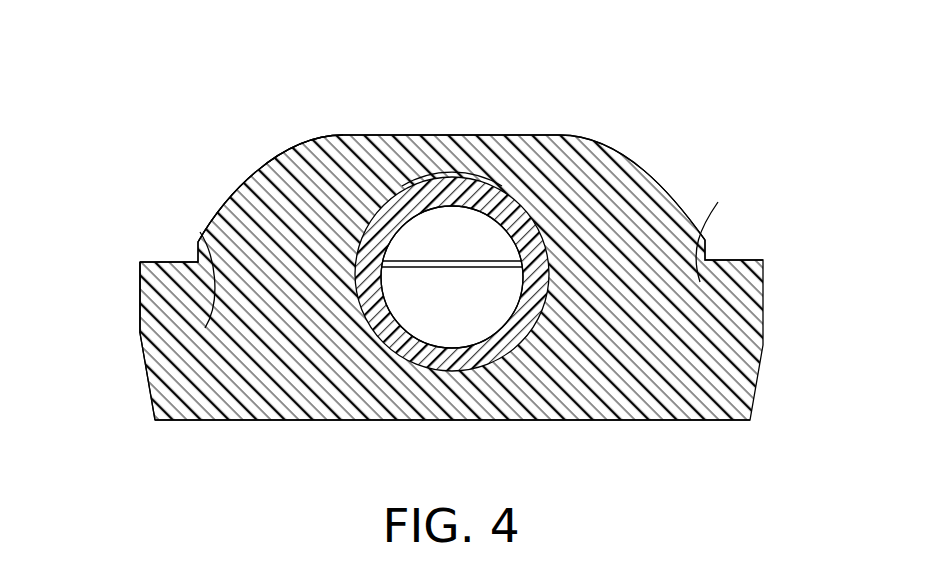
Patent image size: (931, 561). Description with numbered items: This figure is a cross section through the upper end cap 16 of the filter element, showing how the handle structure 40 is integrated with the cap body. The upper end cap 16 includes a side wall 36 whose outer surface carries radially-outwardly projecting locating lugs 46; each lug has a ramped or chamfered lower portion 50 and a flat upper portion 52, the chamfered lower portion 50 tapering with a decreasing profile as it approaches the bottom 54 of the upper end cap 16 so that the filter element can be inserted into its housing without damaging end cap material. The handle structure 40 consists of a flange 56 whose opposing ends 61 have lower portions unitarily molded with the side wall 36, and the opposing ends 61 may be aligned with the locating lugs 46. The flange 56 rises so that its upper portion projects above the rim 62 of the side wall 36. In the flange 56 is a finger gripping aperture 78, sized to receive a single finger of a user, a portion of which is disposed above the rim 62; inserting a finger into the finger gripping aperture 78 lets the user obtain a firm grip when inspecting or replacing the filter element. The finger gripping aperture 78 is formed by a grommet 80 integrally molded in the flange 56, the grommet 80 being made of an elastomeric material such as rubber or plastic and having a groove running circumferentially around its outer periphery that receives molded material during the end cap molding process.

The upper end cap 16 is at (355, 112).
The side wall 36 is at (177, 270).
The handle structure 40 is at (637, 143).
The locating lugs 46 is at (148, 332).
The chamfered lower portion 50 is at (150, 400).
The flat upper portion 52 is at (140, 298).
The bottom 54 is at (290, 421).
The flange 56 is at (260, 180).
The opposing ends 61 is at (175, 263).
The rim 62 is at (468, 260).
The finger gripping aperture 78 is at (453, 339).
The grommet 80 is at (448, 193).